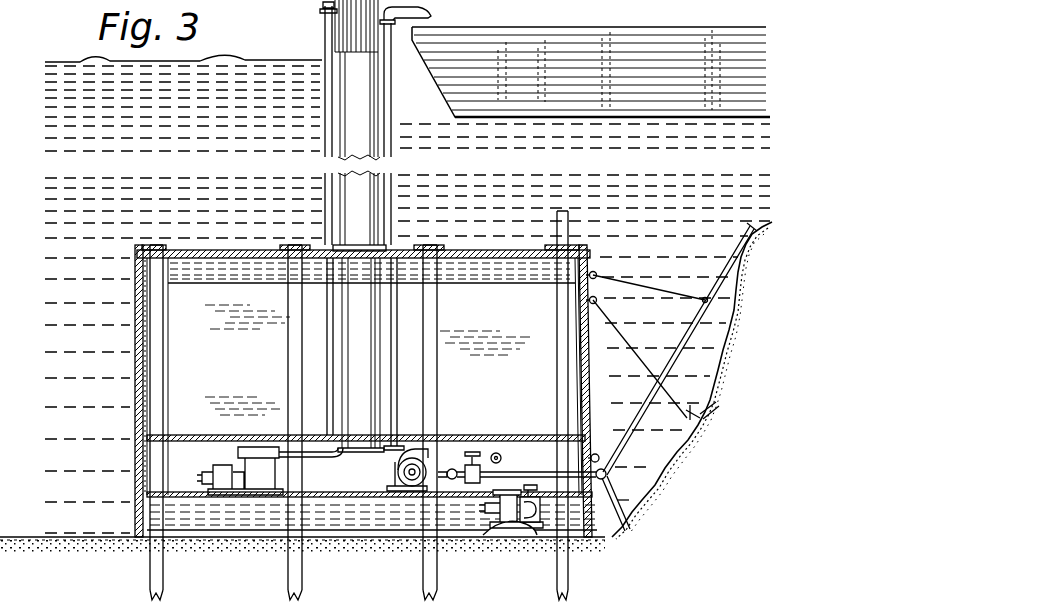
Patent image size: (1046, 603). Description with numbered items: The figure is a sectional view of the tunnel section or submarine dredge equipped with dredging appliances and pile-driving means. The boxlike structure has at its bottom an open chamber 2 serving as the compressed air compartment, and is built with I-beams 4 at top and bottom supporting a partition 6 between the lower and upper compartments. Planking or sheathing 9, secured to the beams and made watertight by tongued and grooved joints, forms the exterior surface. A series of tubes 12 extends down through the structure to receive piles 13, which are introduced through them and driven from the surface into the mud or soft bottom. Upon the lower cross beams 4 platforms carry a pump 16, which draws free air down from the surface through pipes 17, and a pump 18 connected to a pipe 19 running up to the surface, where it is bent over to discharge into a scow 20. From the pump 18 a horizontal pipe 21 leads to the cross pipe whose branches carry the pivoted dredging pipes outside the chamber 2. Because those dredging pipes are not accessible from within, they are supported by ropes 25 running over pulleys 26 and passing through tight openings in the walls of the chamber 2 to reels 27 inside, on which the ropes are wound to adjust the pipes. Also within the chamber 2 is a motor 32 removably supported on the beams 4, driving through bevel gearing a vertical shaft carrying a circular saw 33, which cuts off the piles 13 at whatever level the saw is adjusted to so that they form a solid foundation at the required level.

The open chamber 2 is at (311, 463).
The I-beams 4 is at (526, 285).
The partition 6 is at (504, 430).
The planking or sheathing 9 is at (470, 260).
The tubes 12 is at (165, 374).
The piles 13 is at (166, 592).
The pump 16 is at (240, 471).
The pipes 17 is at (332, 340).
The pump 18 is at (395, 483).
The pipe 19 is at (388, 340).
The scow 20 is at (560, 35).
The horizontal pipe 21 is at (462, 470).
The ropes 25 is at (652, 294).
The pulleys 26 is at (595, 272).
The reels 27 is at (501, 458).
The motor 32 is at (505, 520).
The circular saw 33 is at (522, 530).